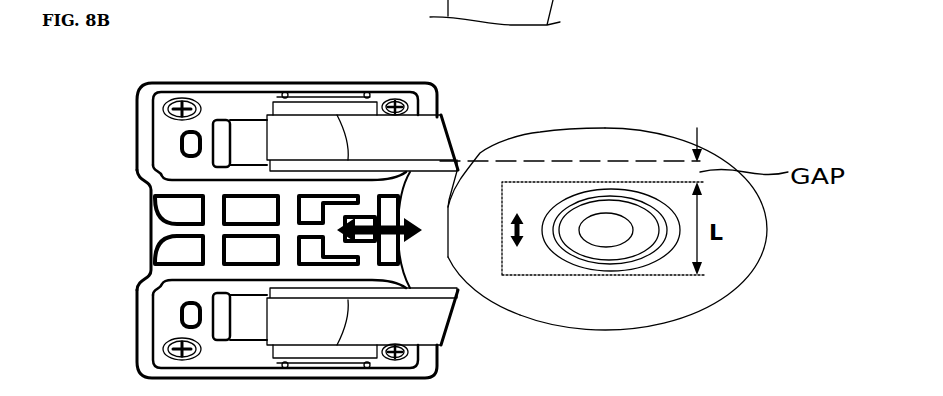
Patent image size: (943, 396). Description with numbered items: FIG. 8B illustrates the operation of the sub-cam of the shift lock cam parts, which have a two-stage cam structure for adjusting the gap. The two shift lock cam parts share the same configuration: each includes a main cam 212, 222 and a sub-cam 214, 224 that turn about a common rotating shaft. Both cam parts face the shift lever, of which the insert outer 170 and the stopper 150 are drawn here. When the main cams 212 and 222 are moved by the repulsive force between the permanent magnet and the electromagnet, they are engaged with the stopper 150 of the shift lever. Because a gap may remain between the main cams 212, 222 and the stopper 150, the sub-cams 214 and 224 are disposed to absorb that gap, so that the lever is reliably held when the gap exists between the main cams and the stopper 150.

The main cam 212 is at (413, 132).
The sub-cam 214 is at (471, 162).
The main cam 222 is at (415, 325).
The sub-cam 224 is at (458, 295).
The insert outer 170 is at (745, 232).
The stopper 150 is at (537, 237).